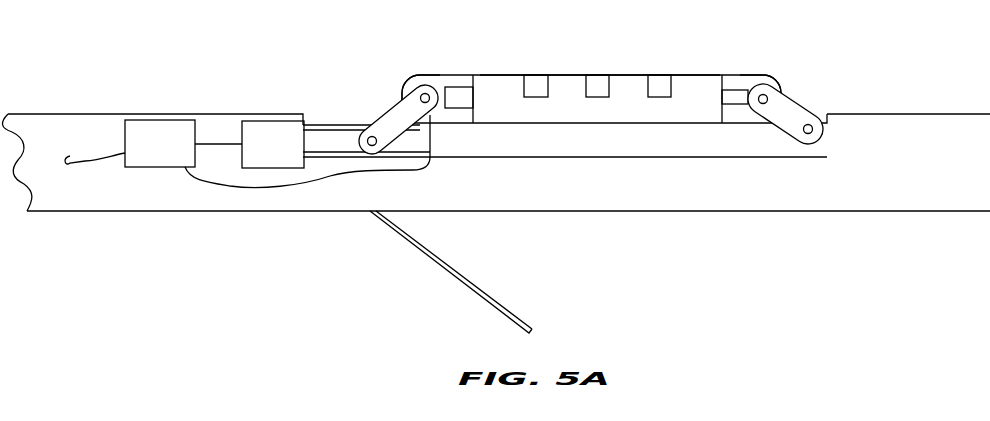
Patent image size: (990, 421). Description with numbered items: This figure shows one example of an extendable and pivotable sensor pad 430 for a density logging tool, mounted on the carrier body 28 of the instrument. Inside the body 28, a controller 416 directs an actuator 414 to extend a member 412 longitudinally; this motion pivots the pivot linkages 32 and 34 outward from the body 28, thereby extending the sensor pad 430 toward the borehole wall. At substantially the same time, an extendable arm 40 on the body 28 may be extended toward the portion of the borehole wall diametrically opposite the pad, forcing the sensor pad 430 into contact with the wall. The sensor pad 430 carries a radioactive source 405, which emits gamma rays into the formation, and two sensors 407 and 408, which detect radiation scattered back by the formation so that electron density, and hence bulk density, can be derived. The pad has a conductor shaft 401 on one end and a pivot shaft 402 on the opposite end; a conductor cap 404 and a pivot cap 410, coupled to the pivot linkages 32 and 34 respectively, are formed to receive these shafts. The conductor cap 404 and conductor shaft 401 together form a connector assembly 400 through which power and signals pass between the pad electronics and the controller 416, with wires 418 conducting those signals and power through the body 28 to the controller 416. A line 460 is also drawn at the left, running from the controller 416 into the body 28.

The body 28 is at (692, 213).
The pivot linkage 32 is at (383, 113).
The pivot linkage 34 is at (798, 100).
The extendable arm 40 is at (457, 277).
The connector assembly 400 is at (447, 36).
The conductor shaft 401 is at (461, 87).
The pivot shaft 402 is at (736, 90).
The conductor cap 404 is at (433, 75).
The radioactive source 405 is at (534, 75).
The sensor 407 is at (596, 75).
The sensor 408 is at (661, 75).
The pivot cap 410 is at (752, 75).
The member 412 is at (328, 125).
The actuator 414 is at (270, 121).
The controller 416 is at (161, 120).
The wires 418 is at (258, 187).
The sensor pad 430 is at (695, 75).
The power line 460 is at (100, 160).